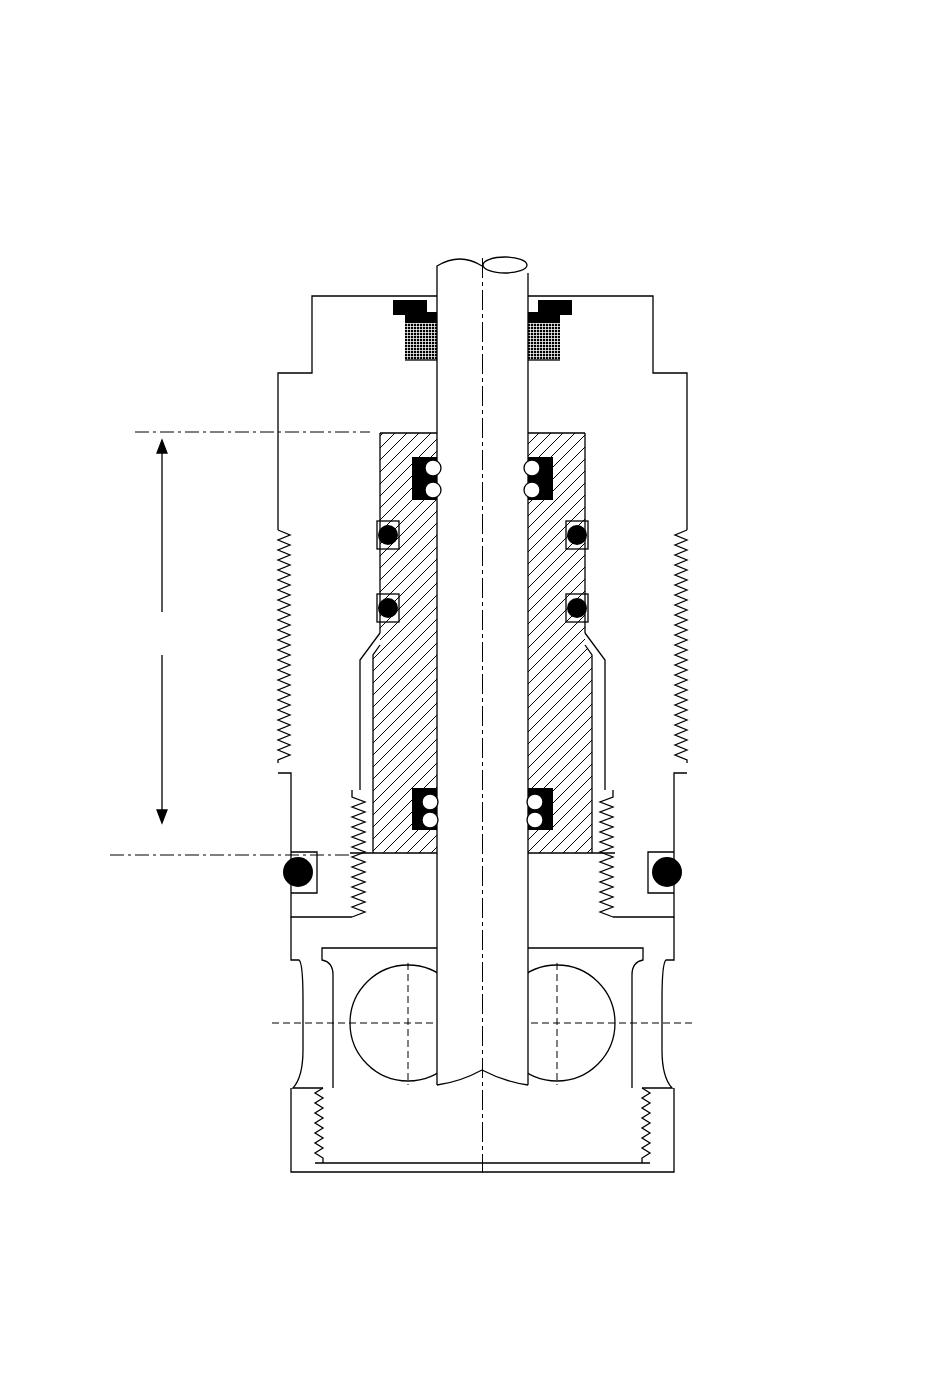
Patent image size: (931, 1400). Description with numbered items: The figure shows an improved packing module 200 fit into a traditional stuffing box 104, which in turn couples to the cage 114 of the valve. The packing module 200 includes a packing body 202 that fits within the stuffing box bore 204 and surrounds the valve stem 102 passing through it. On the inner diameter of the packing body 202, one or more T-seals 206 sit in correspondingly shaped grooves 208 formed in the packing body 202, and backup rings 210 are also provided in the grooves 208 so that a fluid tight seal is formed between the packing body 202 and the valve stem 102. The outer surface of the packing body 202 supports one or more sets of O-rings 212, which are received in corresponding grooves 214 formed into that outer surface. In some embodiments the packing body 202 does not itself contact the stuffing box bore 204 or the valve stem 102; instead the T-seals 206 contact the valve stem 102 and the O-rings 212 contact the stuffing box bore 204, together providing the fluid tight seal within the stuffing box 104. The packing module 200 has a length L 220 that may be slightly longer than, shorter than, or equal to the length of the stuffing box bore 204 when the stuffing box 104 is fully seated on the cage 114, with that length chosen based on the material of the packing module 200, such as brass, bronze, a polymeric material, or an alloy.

The packing module 200 is at (661, 74).
The valve stem 102 is at (457, 250).
The stuffing box 104 is at (605, 343).
The cage 114 is at (346, 1092).
The packing body 202 is at (569, 720).
The stuffing box bore 204 is at (592, 778).
The T-seals 206 is at (558, 470).
The grooves 208 is at (558, 455).
The backup rings 210 is at (425, 455).
The O-rings 212 is at (376, 525).
The grooves 214 is at (578, 590).
The length L 220 is at (147, 628).